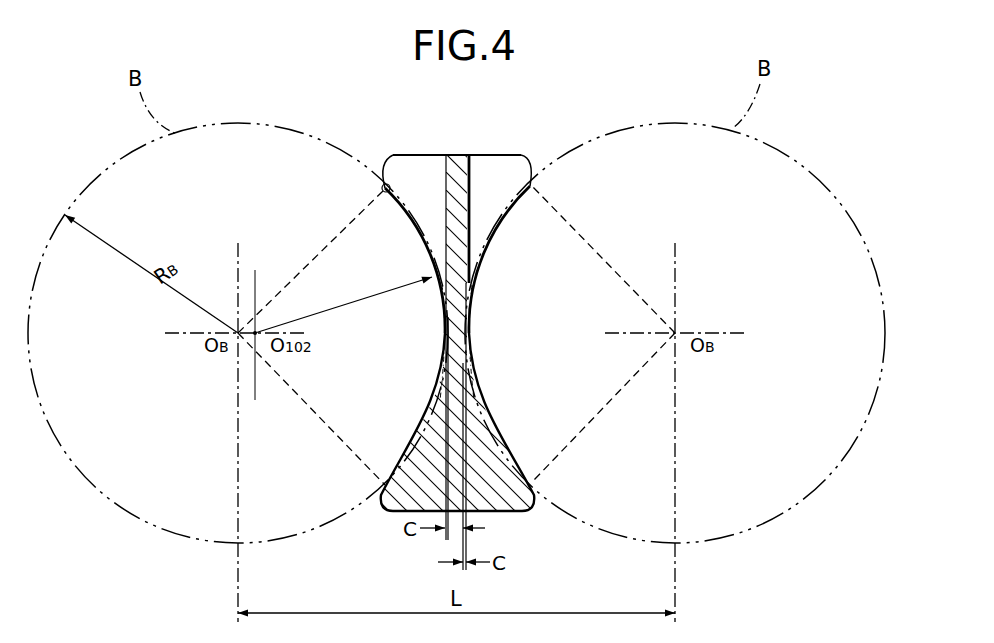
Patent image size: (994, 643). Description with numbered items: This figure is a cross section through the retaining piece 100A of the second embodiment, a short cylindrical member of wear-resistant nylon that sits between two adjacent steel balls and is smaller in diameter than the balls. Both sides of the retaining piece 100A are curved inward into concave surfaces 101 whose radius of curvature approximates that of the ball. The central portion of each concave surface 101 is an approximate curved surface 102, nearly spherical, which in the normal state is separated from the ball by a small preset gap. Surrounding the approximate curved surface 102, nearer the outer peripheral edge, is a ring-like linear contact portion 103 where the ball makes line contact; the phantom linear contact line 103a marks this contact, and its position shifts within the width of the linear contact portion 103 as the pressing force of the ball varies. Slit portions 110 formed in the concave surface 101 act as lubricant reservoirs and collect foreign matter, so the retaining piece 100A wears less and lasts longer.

The retaining piece 100A is at (466, 157).
The concave surface 101 is at (443, 370).
The approximate curved surface 102 is at (447, 322).
The linear contact portion 103 is at (380, 476).
The phantom linear contact line 103a is at (386, 184).
The slit portion 110 is at (500, 185).